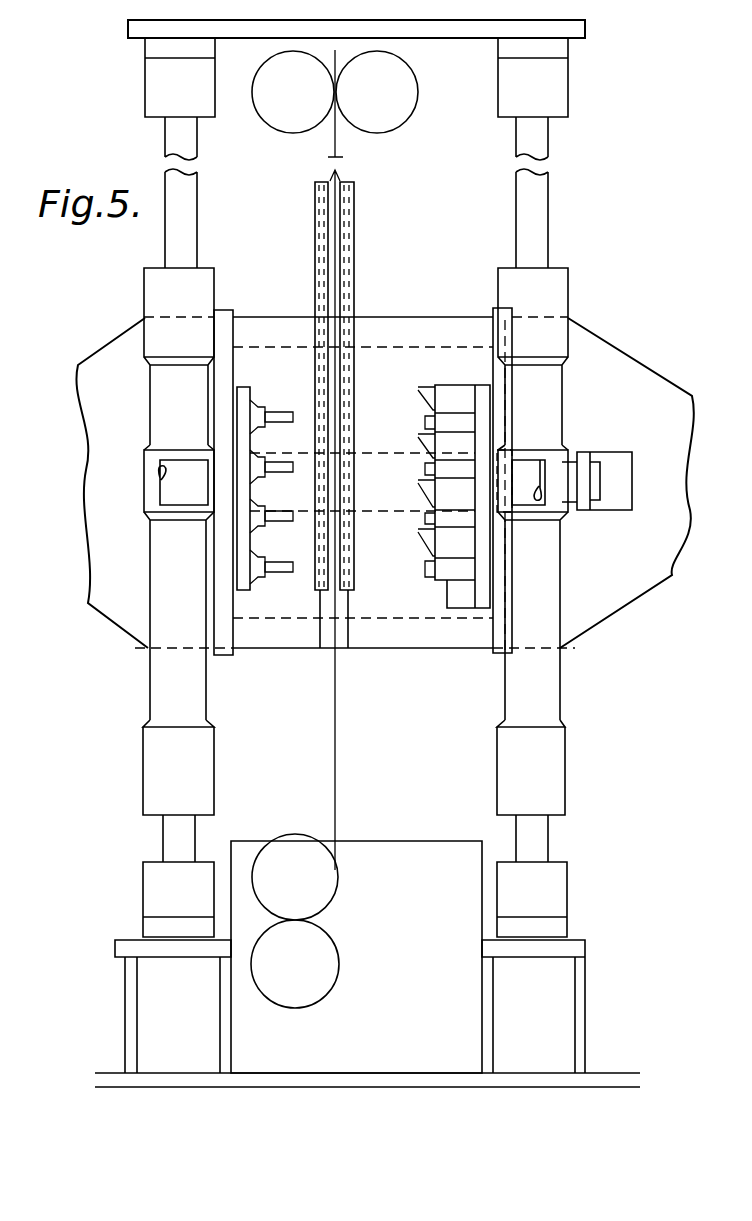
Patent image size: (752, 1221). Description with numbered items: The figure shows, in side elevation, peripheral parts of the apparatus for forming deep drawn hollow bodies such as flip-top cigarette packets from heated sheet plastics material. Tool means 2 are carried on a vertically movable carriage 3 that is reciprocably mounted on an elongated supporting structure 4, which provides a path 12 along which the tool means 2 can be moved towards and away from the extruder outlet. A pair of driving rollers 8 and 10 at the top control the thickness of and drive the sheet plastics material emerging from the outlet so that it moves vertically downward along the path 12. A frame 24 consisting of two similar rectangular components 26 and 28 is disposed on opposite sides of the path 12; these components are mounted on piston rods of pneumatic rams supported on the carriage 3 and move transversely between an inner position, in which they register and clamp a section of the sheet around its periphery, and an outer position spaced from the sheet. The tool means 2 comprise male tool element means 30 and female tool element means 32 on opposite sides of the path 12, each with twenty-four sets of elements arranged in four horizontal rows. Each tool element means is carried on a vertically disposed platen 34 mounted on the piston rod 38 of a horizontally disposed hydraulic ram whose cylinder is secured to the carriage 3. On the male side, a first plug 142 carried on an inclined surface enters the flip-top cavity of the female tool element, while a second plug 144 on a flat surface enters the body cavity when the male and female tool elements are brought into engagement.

The tool means 2 is at (445, 585).
The carriage 3 is at (113, 356).
The elongated supporting structure 4 is at (566, 750).
The driving roller 8 is at (293, 92).
The driving roller 10 is at (377, 92).
The path 12 is at (342, 140).
The frame 24 is at (332, 385).
The frame component 26 is at (314, 232).
The frame component 28 is at (355, 250).
The male tool element means 30 is at (283, 503).
The female tool element means 32 is at (454, 398).
The platen 34 is at (493, 312).
The piston rod 38 is at (528, 500).
The first plug 142 is at (274, 470).
The second plug 144 is at (272, 590).